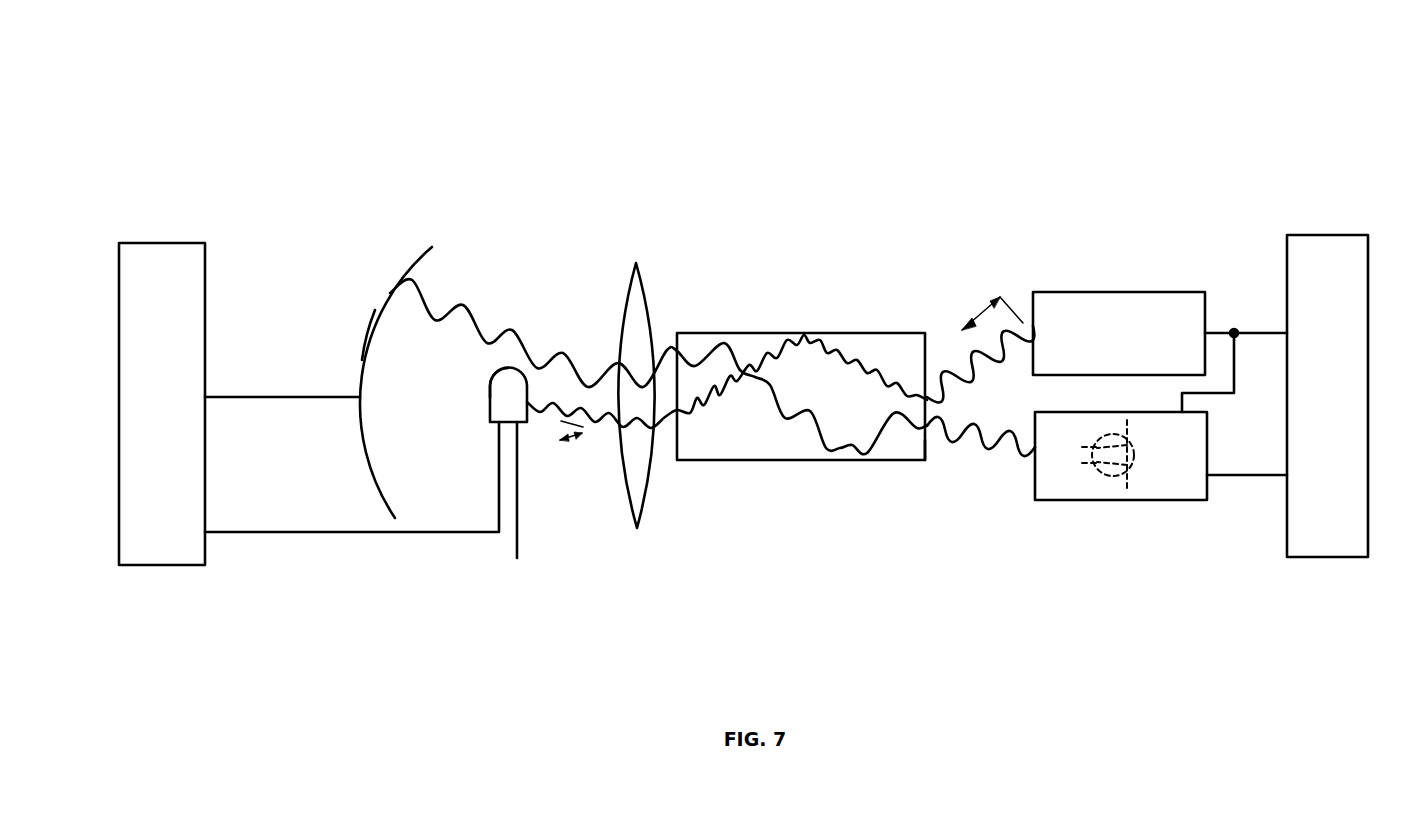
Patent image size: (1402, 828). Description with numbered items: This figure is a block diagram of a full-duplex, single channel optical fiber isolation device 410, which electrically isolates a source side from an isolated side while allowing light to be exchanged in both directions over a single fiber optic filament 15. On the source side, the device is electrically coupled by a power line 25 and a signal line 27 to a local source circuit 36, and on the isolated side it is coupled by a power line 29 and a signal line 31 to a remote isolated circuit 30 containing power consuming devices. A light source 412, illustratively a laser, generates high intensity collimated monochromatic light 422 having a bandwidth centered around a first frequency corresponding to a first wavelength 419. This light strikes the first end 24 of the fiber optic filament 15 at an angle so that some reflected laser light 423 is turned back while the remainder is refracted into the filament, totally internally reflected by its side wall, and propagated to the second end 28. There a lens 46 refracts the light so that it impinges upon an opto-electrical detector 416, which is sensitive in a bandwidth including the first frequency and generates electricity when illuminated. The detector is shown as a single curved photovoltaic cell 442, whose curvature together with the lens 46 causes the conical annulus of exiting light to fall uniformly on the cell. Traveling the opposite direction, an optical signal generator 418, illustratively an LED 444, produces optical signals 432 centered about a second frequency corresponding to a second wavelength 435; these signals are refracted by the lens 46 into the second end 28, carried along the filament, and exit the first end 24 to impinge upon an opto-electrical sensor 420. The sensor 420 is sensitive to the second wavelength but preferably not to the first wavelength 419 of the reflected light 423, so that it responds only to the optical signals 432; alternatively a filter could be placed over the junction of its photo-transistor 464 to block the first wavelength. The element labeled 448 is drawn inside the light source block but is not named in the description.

The full-duplex, single channel optical fiber isolation device 410 is at (769, 133).
The remote isolated circuit 30 is at (148, 242).
The power line 29 is at (272, 395).
The signal line 31 is at (257, 537).
The opto-electrical detector 416 is at (407, 247).
The curved photovoltaic cell 442 is at (368, 330).
The optical signal generator 418 is at (482, 427).
The LED 444 is at (488, 392).
The lens 46 is at (636, 268).
The second end 28 is at (677, 350).
The optical signals 432 is at (605, 427).
The second wavelength 435 is at (567, 442).
The fiber optic filament 15 is at (752, 333).
The first end 24 is at (930, 452).
The first wavelength 419 is at (975, 345).
The light 422 is at (1022, 322).
The reflected laser light 423 is at (990, 463).
The optical filter 448 is at (1068, 330).
The light source 412 is at (1102, 290).
The opto-electrical sensor 420 is at (1147, 503).
The photo-transistor 464 is at (1100, 482).
The power line 25 is at (1275, 330).
The signal line 27 is at (1243, 477).
The local source circuit 36 is at (1318, 235).